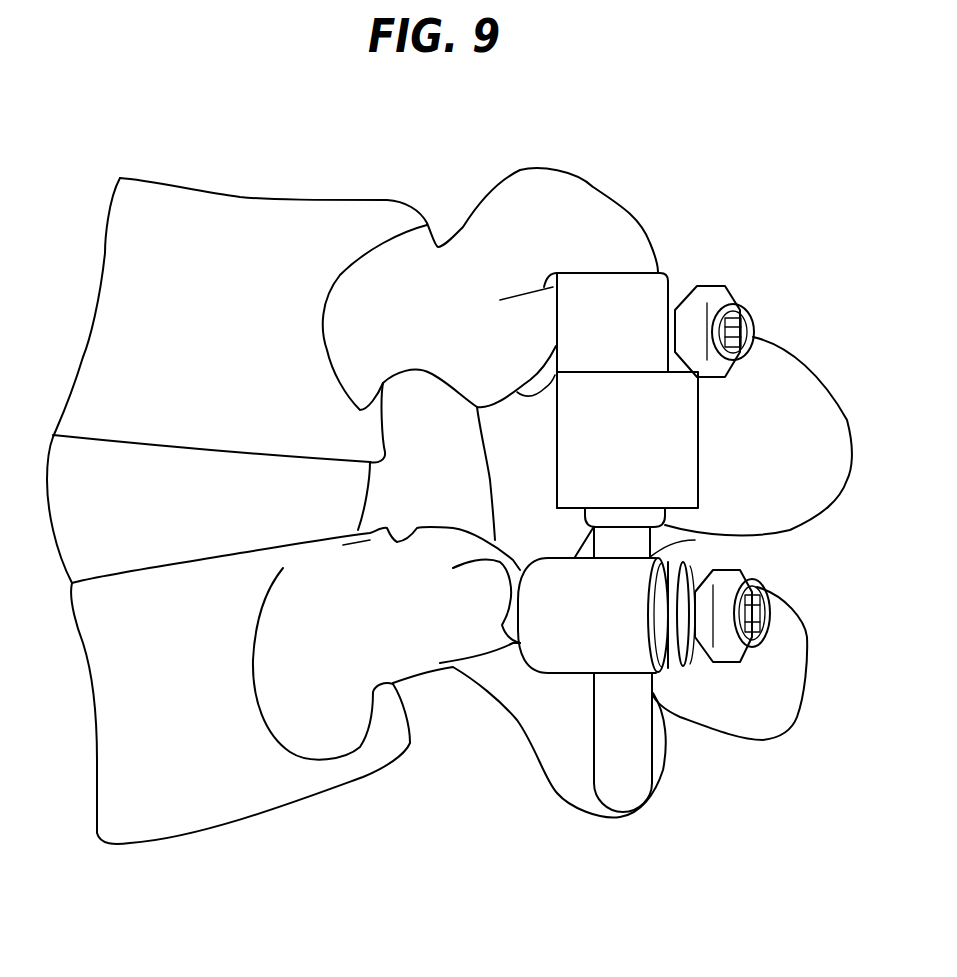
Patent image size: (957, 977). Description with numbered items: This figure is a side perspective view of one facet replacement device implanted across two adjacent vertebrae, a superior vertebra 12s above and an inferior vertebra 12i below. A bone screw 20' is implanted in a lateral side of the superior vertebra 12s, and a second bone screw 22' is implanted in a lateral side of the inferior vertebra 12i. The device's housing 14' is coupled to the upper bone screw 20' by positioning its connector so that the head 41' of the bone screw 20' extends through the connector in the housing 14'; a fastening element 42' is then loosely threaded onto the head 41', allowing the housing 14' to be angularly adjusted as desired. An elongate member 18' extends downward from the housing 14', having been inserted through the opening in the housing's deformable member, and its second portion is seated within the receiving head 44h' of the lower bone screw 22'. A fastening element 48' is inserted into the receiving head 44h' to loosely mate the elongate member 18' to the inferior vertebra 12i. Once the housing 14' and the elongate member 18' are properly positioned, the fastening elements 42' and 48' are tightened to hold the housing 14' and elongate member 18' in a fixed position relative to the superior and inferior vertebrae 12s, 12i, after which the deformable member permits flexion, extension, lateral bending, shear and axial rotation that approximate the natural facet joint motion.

The superior vertebra 12s is at (228, 313).
The inferior vertebra 12i is at (192, 718).
The housing 14' is at (627, 465).
The elongate member 18' is at (587, 685).
The bone screw 20' is at (775, 290).
The bone screw 22' is at (792, 669).
The head 41' is at (635, 334).
The fastening element 42' is at (718, 290).
The receiving head 44h' is at (691, 676).
The fastening element 48' is at (742, 680).